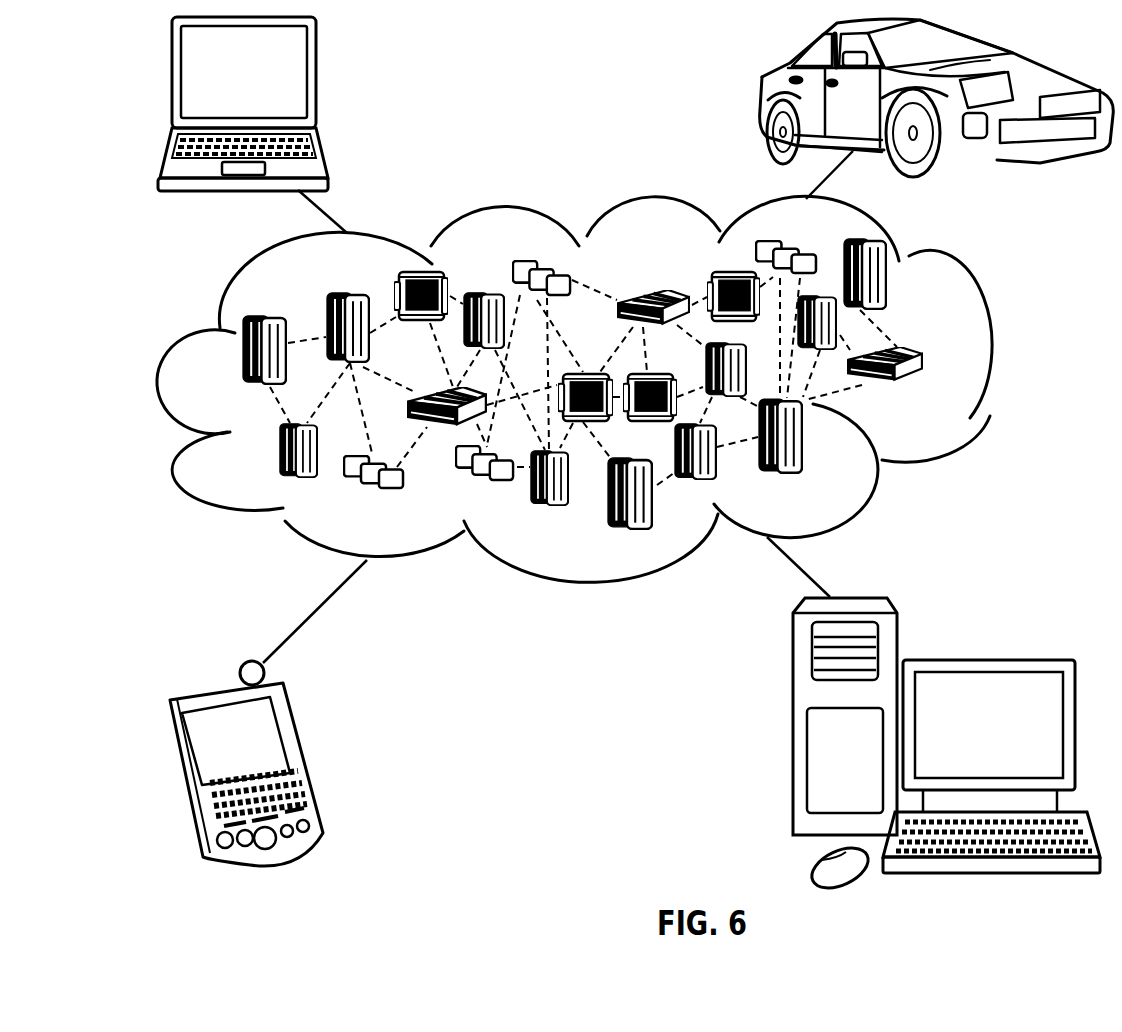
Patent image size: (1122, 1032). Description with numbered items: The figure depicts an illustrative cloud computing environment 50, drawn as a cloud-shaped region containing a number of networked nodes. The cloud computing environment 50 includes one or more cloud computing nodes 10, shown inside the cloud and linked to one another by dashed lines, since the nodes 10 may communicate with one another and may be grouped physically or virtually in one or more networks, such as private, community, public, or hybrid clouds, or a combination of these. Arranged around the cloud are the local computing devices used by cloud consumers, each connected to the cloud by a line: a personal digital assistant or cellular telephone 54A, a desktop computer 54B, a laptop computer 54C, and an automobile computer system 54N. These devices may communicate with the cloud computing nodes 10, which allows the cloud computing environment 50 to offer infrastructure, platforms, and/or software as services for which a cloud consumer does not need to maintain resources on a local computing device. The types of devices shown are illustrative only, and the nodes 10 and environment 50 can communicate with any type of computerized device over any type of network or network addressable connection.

The cloud computing node 10 is at (940, 394).
The cloud computing environment 50 is at (602, 389).
The personal digital assistant or cellular telephone 54A is at (307, 756).
The desktop computer 54B is at (985, 660).
The laptop computer 54C is at (317, 72).
The automobile computer system 54N is at (763, 98).